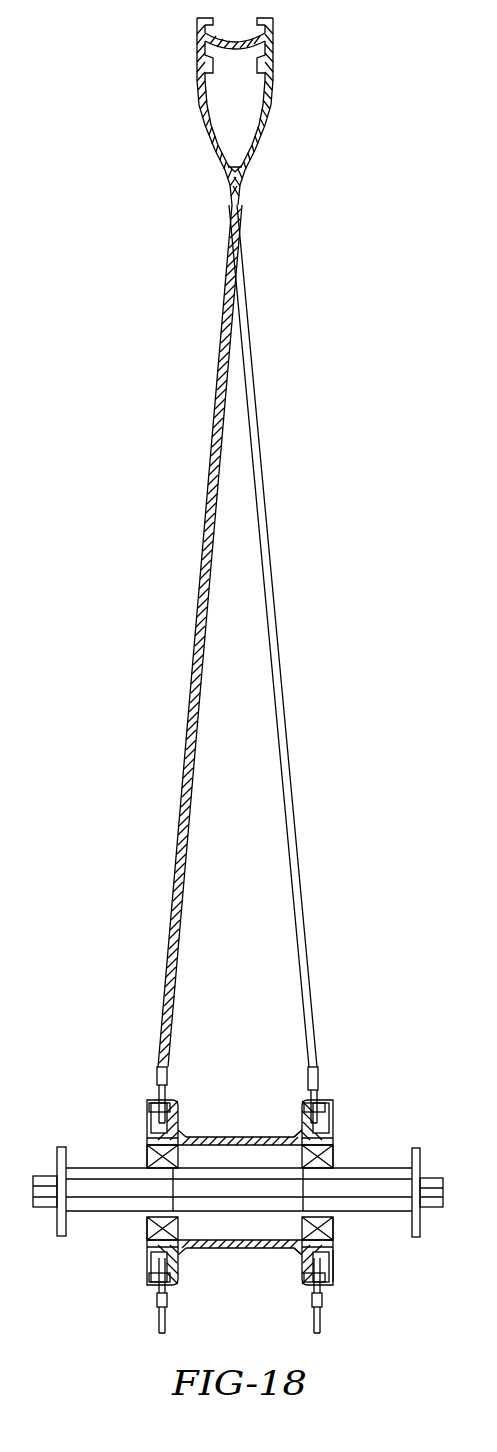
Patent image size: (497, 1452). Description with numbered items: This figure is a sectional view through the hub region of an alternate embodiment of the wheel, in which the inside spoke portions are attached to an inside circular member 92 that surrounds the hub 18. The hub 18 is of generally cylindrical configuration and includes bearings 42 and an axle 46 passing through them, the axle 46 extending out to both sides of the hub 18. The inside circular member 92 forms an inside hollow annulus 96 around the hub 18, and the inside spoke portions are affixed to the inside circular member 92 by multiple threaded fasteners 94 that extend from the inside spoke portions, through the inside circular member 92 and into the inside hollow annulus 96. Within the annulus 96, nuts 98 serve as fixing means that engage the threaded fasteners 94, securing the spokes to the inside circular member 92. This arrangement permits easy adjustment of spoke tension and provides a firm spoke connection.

The hub 18 is at (328, 1140).
The bearings 42 is at (148, 1227).
The axle 46 is at (373, 1167).
The inside circular member 92 is at (326, 1100).
The threaded fasteners 94 is at (157, 1092).
The inside hollow annulus 96 is at (334, 1253).
The nuts 98 is at (153, 1107).